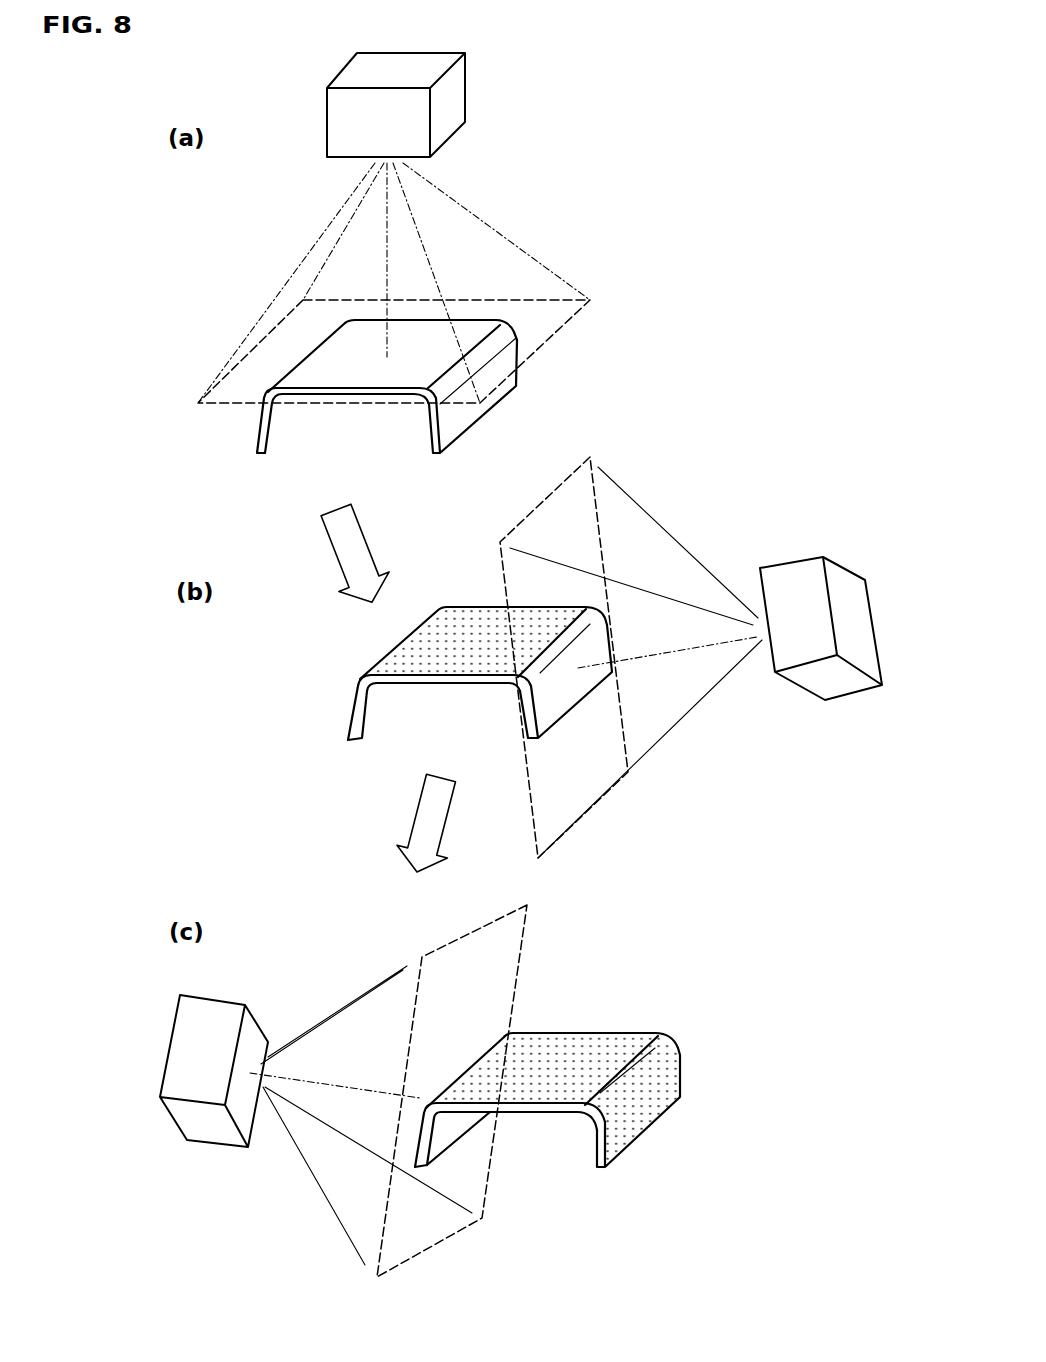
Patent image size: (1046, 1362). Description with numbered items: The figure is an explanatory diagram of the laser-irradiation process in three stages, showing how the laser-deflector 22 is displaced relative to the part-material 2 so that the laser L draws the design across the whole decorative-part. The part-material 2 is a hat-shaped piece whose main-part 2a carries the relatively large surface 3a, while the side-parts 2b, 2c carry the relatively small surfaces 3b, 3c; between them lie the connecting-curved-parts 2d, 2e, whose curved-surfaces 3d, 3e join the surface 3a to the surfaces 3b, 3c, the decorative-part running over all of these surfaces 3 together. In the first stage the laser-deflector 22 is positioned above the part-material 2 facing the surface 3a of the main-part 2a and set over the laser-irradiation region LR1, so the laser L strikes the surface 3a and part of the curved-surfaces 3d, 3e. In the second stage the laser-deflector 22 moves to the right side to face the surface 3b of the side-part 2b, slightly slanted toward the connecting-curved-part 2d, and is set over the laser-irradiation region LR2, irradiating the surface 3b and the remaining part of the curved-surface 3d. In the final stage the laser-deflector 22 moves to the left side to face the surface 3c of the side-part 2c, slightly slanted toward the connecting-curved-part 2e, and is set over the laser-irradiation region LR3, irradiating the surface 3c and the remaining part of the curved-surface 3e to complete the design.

The part-material 2 is at (452, 704).
The main-part 2a is at (347, 377).
The side-part 2b is at (487, 407).
The side-part 2c is at (258, 440).
The connecting-curved-part 2d is at (485, 343).
The connecting-curved-part 2e is at (293, 373).
The surface 3 is at (412, 328).
The surface 3a is at (397, 382).
The surface 3b is at (460, 425).
The surface 3c is at (260, 420).
The curved-surface 3d is at (450, 380).
The curved-surface 3e is at (317, 350).
The laser-deflector 22 is at (455, 100).
The laser L is at (387, 272).
The laser-irradiation region LR1 is at (547, 338).
The laser-irradiation region LR2 is at (598, 517).
The laser-irradiation region LR3 is at (445, 1240).